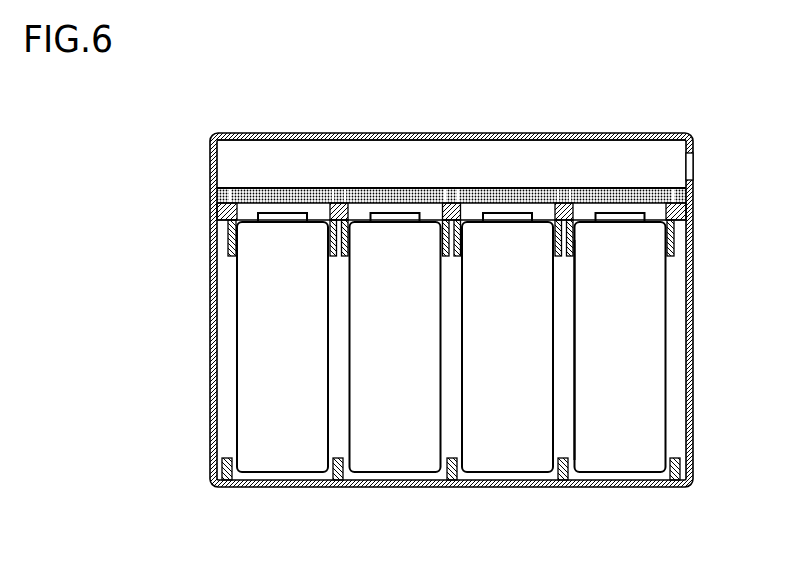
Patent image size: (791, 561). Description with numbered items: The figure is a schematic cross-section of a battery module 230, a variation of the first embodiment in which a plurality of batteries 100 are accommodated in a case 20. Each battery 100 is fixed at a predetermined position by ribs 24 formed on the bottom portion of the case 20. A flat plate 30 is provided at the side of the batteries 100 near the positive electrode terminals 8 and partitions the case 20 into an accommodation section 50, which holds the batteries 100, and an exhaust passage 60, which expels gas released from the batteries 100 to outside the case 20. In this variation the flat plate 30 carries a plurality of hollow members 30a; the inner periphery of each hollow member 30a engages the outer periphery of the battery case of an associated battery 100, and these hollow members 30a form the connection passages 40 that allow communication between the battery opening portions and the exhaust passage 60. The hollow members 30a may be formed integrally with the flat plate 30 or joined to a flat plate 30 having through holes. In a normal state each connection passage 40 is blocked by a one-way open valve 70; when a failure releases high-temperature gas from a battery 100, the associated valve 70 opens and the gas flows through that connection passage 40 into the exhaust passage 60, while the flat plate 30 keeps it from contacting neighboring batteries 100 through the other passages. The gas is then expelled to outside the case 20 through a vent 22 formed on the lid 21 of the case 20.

The battery module 230 is at (692, 75).
The case 20 is at (693, 368).
The vent 22 is at (693, 166).
The lid 21 is at (562, 133).
The exhaust passage 60 is at (505, 155).
The one-way open valve 70 is at (391, 189).
The flat plate 30 is at (411, 165).
The hollow member 30a is at (230, 230).
The connection passage 40 is at (315, 215).
The battery 100 is at (309, 336).
The positive electrode terminal 8 is at (625, 218).
The accommodation section 50 is at (563, 315).
The rib 24 is at (335, 487).